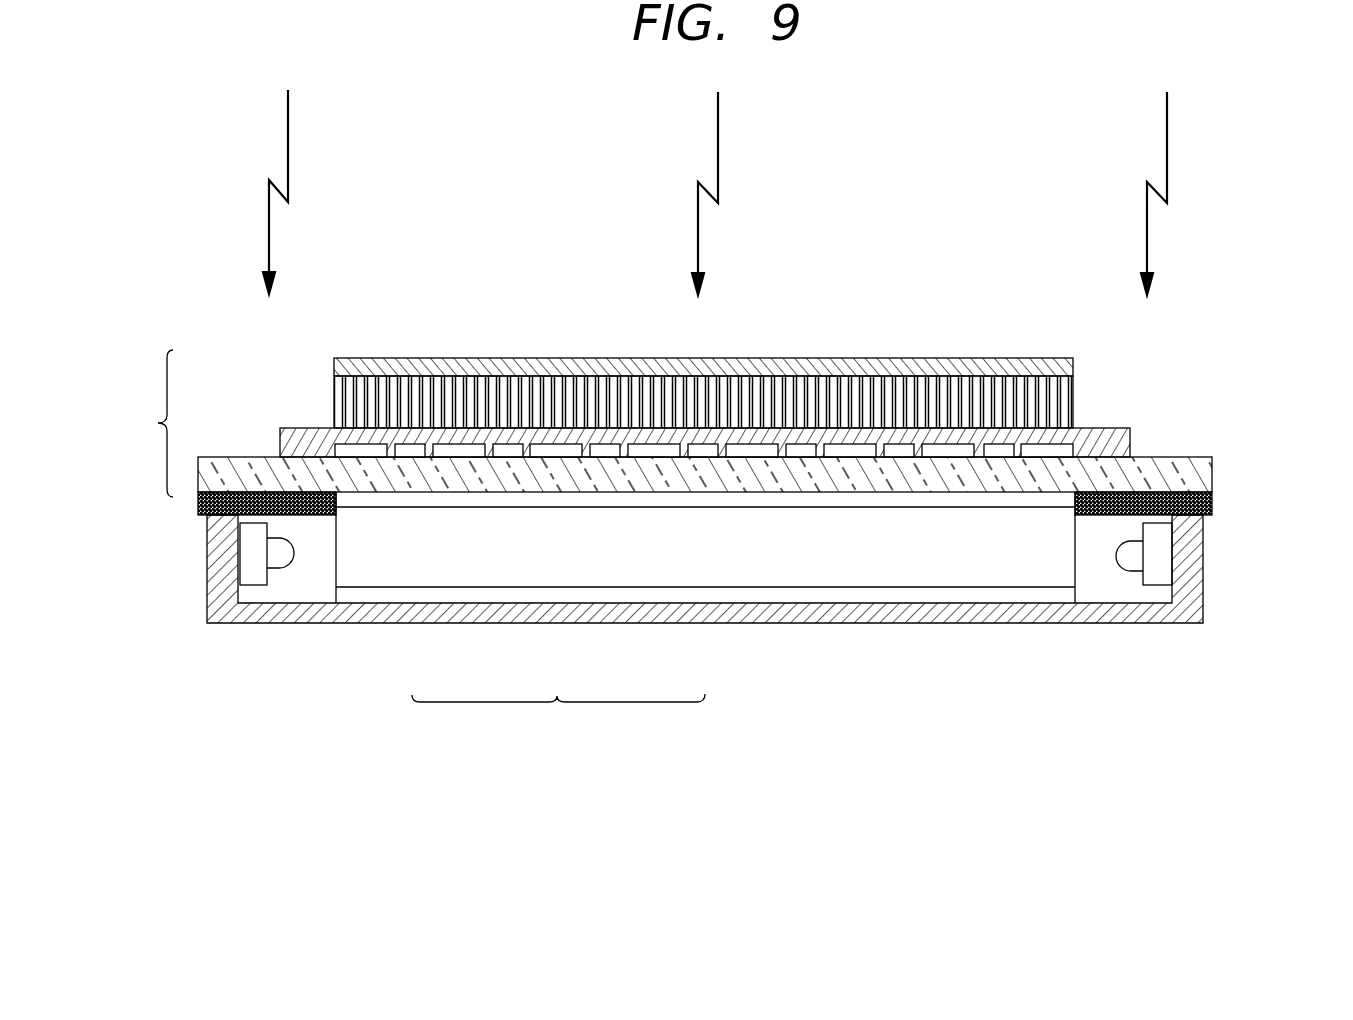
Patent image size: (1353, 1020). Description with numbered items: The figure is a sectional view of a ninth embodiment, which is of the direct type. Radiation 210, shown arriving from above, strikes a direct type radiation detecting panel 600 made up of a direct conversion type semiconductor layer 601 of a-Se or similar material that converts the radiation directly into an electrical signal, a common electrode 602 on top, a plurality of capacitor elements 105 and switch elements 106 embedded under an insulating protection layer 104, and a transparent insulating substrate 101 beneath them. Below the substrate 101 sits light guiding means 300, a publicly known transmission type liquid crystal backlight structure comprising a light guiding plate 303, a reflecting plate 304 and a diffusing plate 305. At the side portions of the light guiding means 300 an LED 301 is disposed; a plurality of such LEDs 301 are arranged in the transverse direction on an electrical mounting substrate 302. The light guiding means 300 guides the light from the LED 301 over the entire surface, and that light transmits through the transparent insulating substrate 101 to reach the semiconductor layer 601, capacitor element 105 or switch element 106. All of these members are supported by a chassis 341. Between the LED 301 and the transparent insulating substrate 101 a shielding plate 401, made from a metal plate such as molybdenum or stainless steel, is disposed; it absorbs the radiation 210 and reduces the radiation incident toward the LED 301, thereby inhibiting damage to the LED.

The radiation 210 is at (718, 147).
The direct type radiation detecting panel 600 is at (592, 392).
The direct conversion type semiconductor layer 601 is at (766, 392).
The common electrode 602 is at (927, 366).
The insulating protection layer 104 is at (279, 432).
The capacitor element 105 is at (1061, 444).
The switch element 106 is at (1007, 444).
The transparent insulating substrate 101 is at (1202, 465).
The shielding plate 401 is at (200, 503).
The chassis 341 is at (902, 616).
The light guiding means 300 is at (705, 617).
The light guiding plate 303 is at (442, 566).
The reflecting plate 304 is at (568, 592).
The diffusing plate 305 is at (668, 497).
The electrical mounting substrate 302 is at (253, 575).
The LED 301 is at (287, 568).